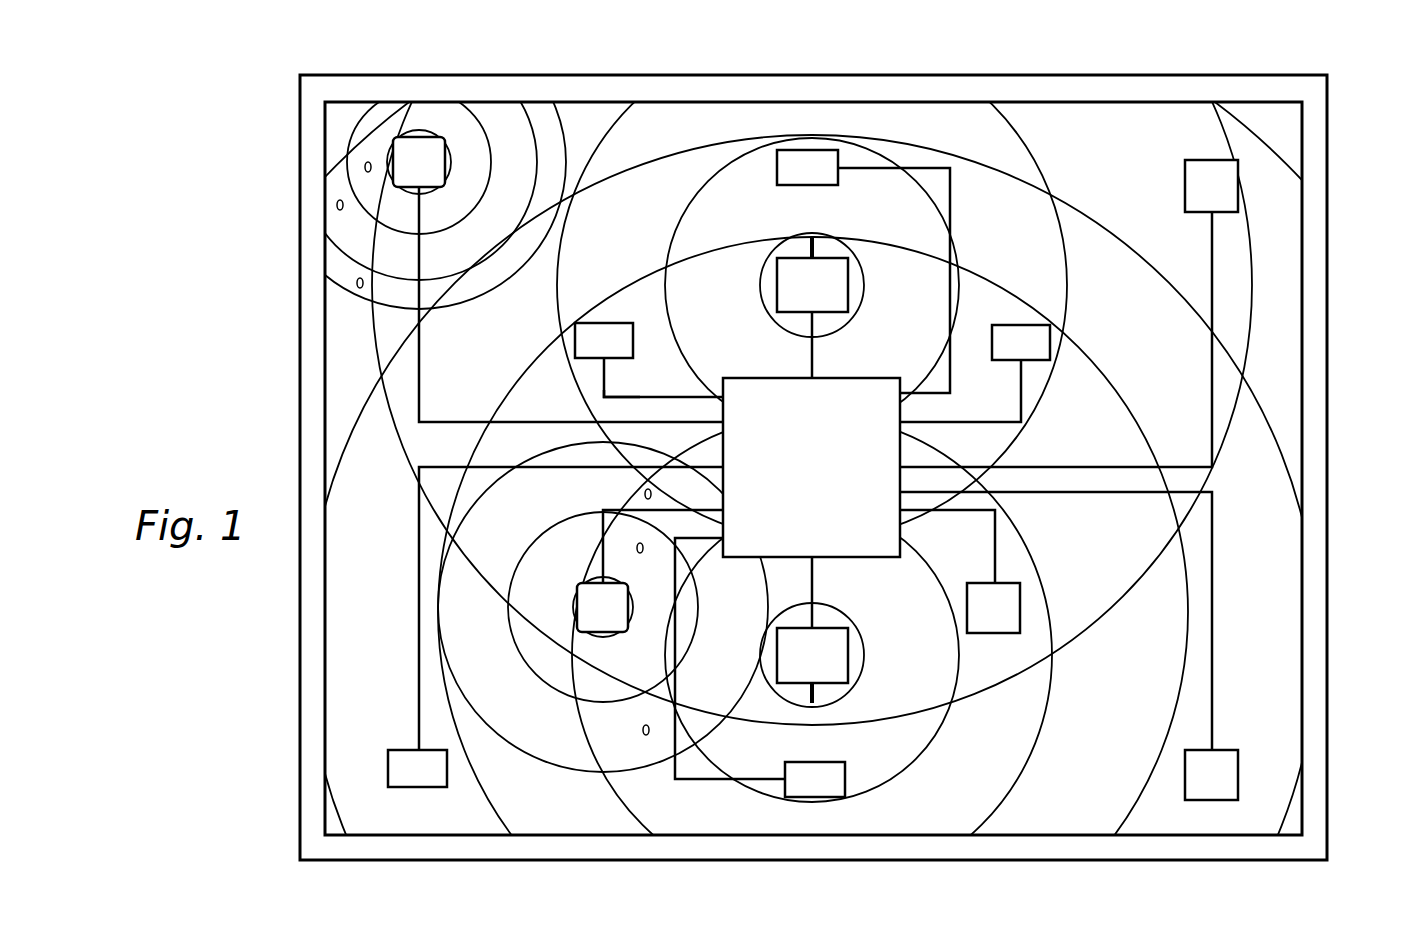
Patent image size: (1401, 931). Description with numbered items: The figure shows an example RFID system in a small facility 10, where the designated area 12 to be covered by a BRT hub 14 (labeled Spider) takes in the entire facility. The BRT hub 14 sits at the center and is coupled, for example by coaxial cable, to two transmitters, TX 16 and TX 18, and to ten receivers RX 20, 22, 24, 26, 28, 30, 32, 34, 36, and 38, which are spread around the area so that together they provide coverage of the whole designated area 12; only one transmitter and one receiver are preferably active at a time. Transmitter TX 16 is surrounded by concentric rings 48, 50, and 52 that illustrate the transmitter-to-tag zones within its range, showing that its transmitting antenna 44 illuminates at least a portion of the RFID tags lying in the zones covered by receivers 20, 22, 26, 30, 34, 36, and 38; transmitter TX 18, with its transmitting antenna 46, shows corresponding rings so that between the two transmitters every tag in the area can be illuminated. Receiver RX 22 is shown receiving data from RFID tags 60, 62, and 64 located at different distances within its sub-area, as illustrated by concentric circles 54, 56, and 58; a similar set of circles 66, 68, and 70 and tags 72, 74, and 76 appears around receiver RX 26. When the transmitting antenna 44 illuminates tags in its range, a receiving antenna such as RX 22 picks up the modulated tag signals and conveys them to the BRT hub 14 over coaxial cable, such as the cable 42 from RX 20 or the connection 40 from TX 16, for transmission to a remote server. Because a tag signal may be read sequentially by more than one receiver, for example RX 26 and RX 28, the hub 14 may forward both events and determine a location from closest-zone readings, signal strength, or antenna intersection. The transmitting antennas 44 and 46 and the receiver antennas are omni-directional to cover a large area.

The facility 10 is at (990, 76).
The designated area 12 is at (1302, 243).
The BRT hub 14 is at (770, 378).
The transmitter TX 1 16 is at (848, 285).
The transmitter TX 2 18 is at (866, 635).
The receiver RX 1 20 is at (606, 323).
The receiver RX 2 22 is at (404, 137).
The receiver RX 3 24 is at (390, 755).
The receiver RX 4 26 is at (577, 603).
The receiver RX 5 28 is at (846, 790).
The receiver RX 6 30 is at (975, 632).
The receiver RX 7 32 is at (1238, 775).
The receiver RX 8 34 is at (1185, 184).
The receiver RX 9 36 is at (1022, 325).
The receiver RX 10 38 is at (806, 150).
The connection between Tx1 and SPIDER 40 is at (812, 355).
The coaxial cable 42 is at (626, 397).
The transmitting antenna 44 is at (818, 240).
The transmitting antenna 46 is at (816, 700).
The concentric ring 48 is at (790, 240).
The concentric ring 50 is at (680, 190).
The concentric ring 52 is at (620, 140).
The concentric circle 54 is at (493, 157).
The concentric circle 56 is at (440, 275).
The concentric circle 58 is at (470, 300).
The RFID tag 60 is at (365, 167).
The RFID tag 62 is at (338, 205).
The RFID tag 64 is at (360, 285).
The first range circle around Rx4 66 is at (607, 640).
The second range circle around Rx4 68 is at (548, 690).
The third range circle around Rx4 70 is at (565, 440).
The first tag location near Rx4 72 is at (645, 494).
The second tag location near Rx4 74 is at (595, 565).
The third tag location near Rx4 76 is at (640, 730).